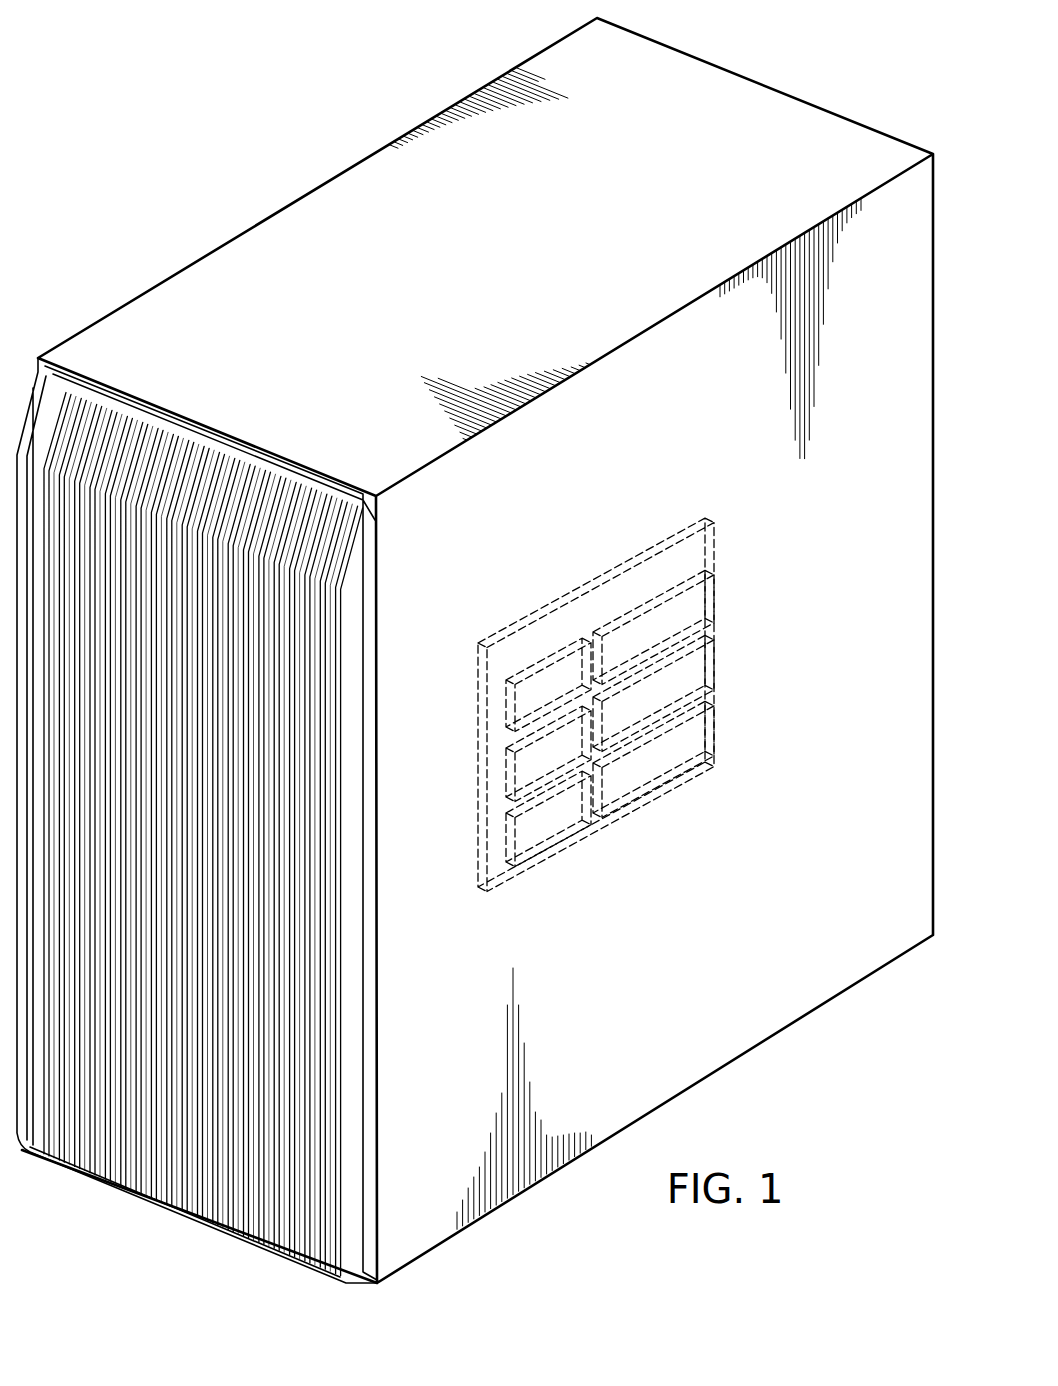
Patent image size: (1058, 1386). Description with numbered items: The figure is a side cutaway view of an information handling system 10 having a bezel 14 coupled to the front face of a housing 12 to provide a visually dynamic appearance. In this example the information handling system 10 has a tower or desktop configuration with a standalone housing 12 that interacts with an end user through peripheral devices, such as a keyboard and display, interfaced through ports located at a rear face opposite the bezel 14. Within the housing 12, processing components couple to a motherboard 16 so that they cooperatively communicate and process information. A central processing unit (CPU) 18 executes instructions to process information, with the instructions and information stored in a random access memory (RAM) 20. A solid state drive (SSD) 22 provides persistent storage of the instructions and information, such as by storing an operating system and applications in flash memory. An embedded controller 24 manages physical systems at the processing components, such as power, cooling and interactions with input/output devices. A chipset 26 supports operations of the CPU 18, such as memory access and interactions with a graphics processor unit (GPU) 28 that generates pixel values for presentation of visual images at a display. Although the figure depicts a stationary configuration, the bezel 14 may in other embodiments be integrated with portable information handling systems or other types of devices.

The information handling system 10 is at (239, 134).
The housing 12 is at (190, 260).
The bezel 14 is at (74, 1190).
The motherboard 16 is at (704, 546).
The central processing unit (CPU) 18 is at (513, 717).
The random access memory (RAM) 20 is at (515, 786).
The solid state drive (SSD) 22 is at (522, 846).
The embedded controller 24 is at (706, 603).
The chipset 26 is at (706, 667).
The graphics processor unit (GPU) 28 is at (688, 752).